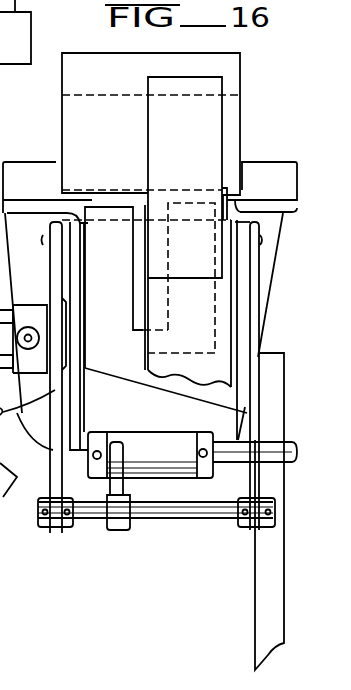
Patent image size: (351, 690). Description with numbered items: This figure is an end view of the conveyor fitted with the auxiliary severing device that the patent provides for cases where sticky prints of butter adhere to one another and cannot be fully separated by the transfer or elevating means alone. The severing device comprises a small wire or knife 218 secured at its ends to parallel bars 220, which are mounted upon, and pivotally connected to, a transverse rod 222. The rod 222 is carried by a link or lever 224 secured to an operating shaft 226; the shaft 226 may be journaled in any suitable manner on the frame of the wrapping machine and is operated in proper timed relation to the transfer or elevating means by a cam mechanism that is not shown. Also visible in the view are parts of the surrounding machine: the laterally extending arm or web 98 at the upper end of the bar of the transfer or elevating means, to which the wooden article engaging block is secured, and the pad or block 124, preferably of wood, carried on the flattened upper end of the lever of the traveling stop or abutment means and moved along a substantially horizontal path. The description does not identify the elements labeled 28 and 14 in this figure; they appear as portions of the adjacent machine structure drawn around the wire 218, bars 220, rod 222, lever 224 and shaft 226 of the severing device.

The support plate 28 is at (18, 40).
The pad or block 124 is at (227, 75).
The frame member 14 is at (230, 125).
The wire or knife 218 is at (185, 225).
The parallel bars 220 is at (252, 295).
The laterally extending arm or web 98 is at (233, 395).
The operating shaft 226 is at (233, 455).
The link or lever 224 is at (118, 498).
The transverse rod 222 is at (187, 507).